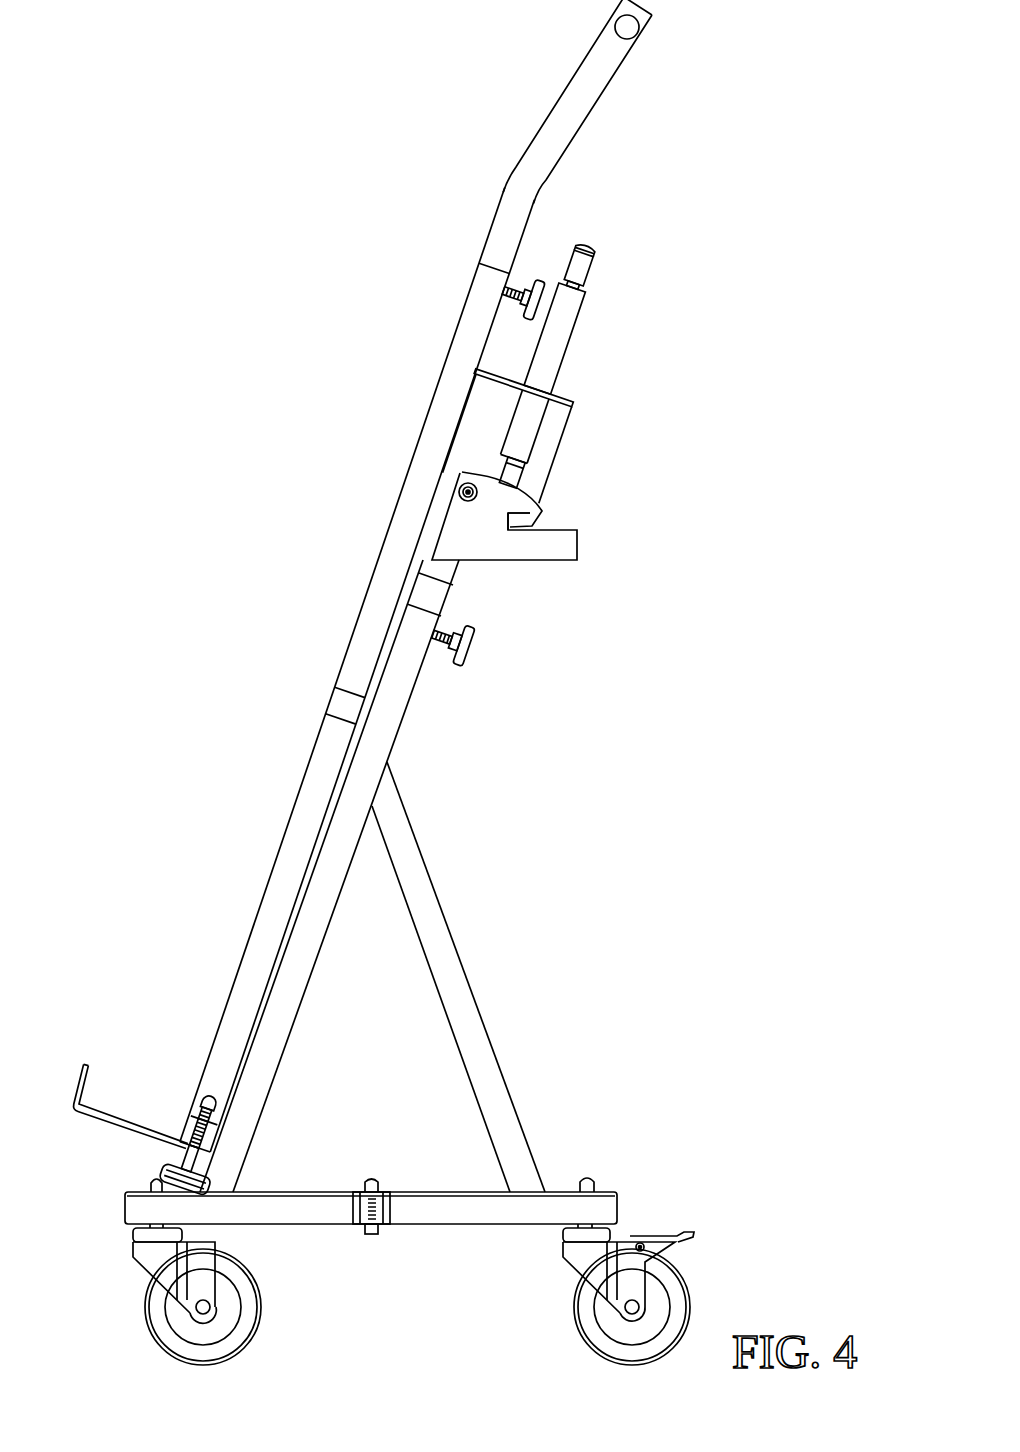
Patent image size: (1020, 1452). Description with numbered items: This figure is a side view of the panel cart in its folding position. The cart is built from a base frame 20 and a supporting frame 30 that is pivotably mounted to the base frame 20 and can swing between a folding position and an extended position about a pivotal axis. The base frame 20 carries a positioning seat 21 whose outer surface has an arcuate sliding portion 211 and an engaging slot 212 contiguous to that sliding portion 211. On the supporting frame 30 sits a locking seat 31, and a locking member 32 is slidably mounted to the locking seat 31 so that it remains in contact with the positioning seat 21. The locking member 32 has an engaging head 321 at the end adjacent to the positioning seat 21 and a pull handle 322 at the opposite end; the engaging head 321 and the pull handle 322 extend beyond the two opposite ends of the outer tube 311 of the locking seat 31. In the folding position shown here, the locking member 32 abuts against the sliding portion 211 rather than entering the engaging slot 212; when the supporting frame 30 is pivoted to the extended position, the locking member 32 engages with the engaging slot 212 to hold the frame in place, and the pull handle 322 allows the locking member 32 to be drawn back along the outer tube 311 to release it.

The base frame 20 is at (448, 870).
The positioning seat 21 is at (485, 540).
The sliding portion 211 is at (517, 487).
The engaging slot 212 is at (523, 523).
The supporting frame 30 is at (337, 627).
The locking seat 31 is at (482, 432).
The outer tube 311 is at (550, 347).
The locking member 32 is at (597, 237).
The engaging head 321 is at (510, 470).
The pull handle 322 is at (575, 268).